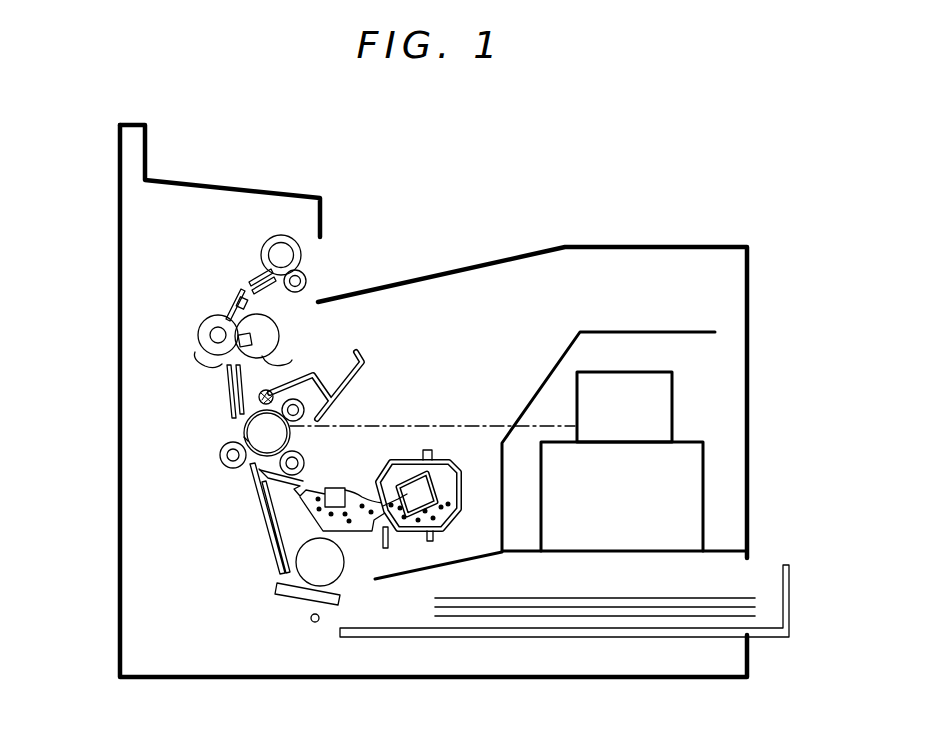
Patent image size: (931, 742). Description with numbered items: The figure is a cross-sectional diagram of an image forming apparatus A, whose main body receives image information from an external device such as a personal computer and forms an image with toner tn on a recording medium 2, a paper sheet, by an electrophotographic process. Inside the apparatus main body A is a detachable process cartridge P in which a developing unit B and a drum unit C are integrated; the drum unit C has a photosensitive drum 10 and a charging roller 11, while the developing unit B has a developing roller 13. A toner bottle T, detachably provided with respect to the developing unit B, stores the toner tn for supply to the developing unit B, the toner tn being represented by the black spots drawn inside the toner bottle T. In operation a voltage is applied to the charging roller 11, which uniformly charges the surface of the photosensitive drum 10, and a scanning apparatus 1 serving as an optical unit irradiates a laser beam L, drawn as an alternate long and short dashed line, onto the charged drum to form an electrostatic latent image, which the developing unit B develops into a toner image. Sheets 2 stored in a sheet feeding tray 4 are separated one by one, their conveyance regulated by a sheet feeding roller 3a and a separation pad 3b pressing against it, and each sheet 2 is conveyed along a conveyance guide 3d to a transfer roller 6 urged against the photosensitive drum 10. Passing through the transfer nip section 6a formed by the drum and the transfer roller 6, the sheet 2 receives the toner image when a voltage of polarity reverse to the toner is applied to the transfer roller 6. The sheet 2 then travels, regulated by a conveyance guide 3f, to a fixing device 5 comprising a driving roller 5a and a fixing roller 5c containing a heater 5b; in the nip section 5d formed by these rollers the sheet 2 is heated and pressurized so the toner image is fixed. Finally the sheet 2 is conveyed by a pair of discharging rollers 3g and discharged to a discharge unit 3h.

The image forming apparatus A is at (621, 181).
The scanning apparatus 1 is at (660, 410).
The recording medium 2 is at (636, 598).
The sheet feeding roller 3a is at (328, 578).
The separation pad 3b is at (290, 597).
The conveyance guide 3d is at (258, 506).
The conveyance guide 3f is at (228, 386).
The pair of discharging rollers 3g is at (282, 235).
The discharge unit 3h is at (526, 250).
The sheet feeding tray 4 is at (769, 639).
The fixing device 5 is at (270, 363).
The driving roller 5a is at (213, 316).
The heater 5b is at (242, 291).
The fixing roller 5c is at (277, 320).
The nip section 5d is at (239, 339).
The transfer roller 6 is at (221, 452).
The transfer nip section 6a is at (246, 440).
The photosensitive drum 10 is at (257, 428).
The charging roller 11 is at (296, 403).
The developing roller 13 is at (282, 466).
The toner tn is at (351, 513).
The process cartridge P is at (468, 208).
The drum unit C is at (375, 341).
The developing unit B is at (370, 443).
The toner bottle T is at (420, 443).
The laser beam L is at (480, 405).